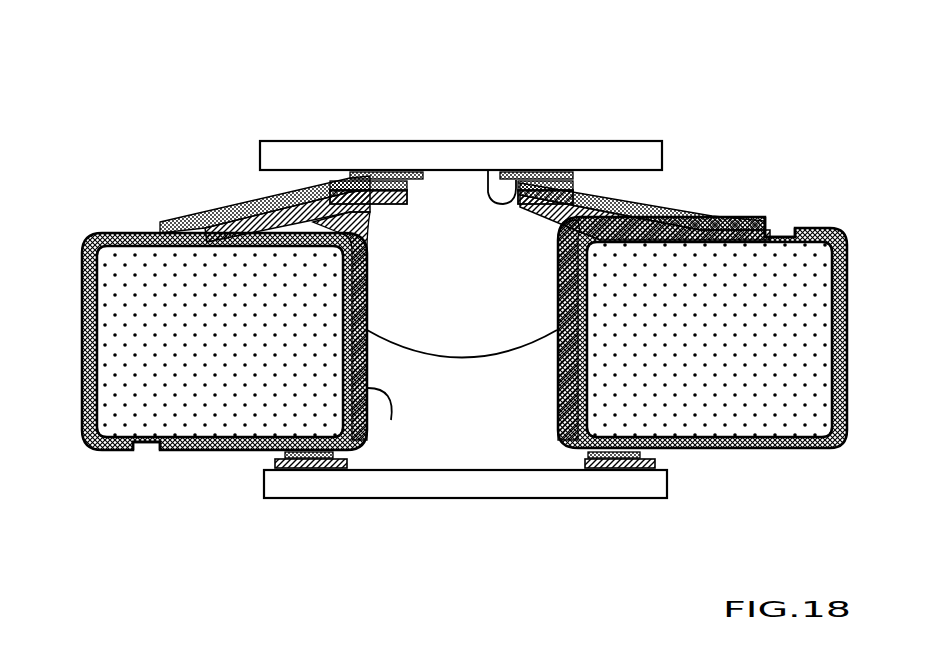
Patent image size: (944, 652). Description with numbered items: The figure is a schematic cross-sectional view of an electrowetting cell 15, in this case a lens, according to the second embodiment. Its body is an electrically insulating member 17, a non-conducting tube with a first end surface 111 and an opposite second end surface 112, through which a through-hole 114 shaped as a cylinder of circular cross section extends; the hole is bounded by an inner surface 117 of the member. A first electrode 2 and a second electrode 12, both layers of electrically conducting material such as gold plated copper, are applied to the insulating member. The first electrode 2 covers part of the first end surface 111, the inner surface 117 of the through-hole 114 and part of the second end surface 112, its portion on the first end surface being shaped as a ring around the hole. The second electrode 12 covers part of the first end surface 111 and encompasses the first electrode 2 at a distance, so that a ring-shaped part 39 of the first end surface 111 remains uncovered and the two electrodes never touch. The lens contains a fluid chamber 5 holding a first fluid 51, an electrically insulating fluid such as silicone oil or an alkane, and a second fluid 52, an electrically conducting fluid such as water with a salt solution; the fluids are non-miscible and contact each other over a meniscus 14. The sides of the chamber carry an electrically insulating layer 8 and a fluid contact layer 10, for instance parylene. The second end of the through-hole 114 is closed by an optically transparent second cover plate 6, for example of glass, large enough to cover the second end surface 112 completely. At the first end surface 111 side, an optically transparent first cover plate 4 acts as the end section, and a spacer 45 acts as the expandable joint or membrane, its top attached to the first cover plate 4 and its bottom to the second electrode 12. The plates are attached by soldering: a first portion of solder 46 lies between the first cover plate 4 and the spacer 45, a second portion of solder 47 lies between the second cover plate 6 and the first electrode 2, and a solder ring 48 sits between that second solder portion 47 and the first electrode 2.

The electrowetting cell 15 is at (201, 141).
The first cover plate 4 is at (305, 150).
The second cover plate 6 is at (303, 487).
The second electrode 12 is at (127, 232).
The first electrode 2 is at (213, 452).
The fluid chamber 5 is at (443, 263).
The second fluid 52 is at (461, 207).
The fluid contact layer 10 is at (488, 141).
The first portion of solder 46 is at (543, 170).
The spacer 45 is at (603, 183).
The electrically insulating layer 8 is at (632, 198).
The uncovered ring-shaped part of the first end surface 39 is at (708, 218).
The first end surface 111 is at (777, 237).
The second end surface 112 is at (152, 443).
The inner surface 117 is at (391, 420).
The first fluid 51 is at (413, 420).
The meniscus 14 is at (452, 358).
The through-hole 114 is at (498, 432).
The second portion of solder 47 is at (598, 468).
The solder ring 48 is at (622, 462).
The electrically insulating member 17 is at (747, 378).